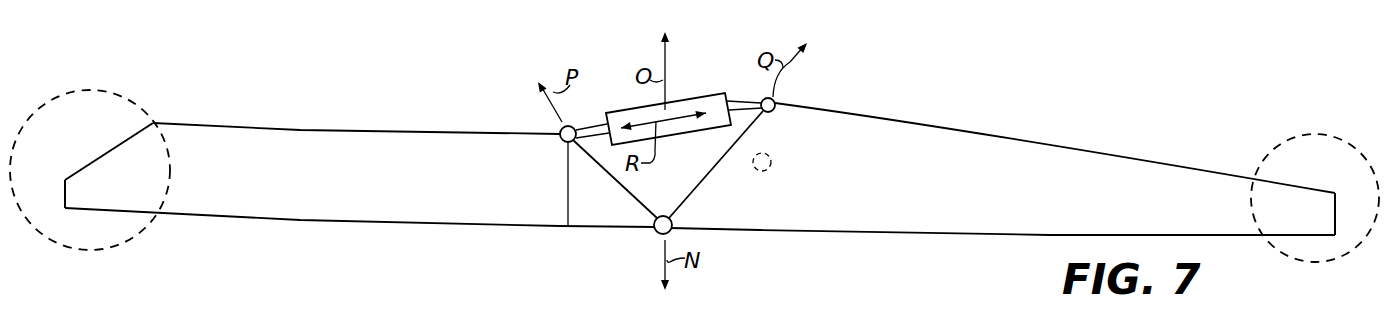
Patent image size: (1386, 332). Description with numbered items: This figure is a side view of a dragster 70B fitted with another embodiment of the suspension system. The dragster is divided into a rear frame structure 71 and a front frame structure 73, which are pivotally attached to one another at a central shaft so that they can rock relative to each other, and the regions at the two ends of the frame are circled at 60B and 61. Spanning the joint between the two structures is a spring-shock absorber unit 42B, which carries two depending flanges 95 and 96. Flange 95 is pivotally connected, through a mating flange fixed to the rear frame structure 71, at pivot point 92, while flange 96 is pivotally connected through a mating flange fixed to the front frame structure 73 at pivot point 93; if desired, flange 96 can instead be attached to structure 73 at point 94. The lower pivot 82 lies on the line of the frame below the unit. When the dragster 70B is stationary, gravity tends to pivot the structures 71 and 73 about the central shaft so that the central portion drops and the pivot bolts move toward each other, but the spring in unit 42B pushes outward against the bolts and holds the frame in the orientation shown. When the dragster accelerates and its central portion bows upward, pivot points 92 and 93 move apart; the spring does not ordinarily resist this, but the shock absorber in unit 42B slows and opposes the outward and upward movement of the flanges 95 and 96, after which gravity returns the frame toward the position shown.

The blade root end region 60B is at (170, 182).
The blade tip end region 61 is at (1298, 138).
The rear frame structure 71 is at (285, 112).
The dragster 70B is at (905, 97).
The front frame structure 73 is at (1083, 139).
The spring-shock absorber unit 42B is at (670, 95).
The lower pivot joint 82 is at (657, 233).
The pivot point 92 is at (562, 146).
The pivot point 93 is at (775, 108).
The point 94 is at (772, 168).
The flange 95 is at (587, 127).
The flange 96 is at (743, 113).